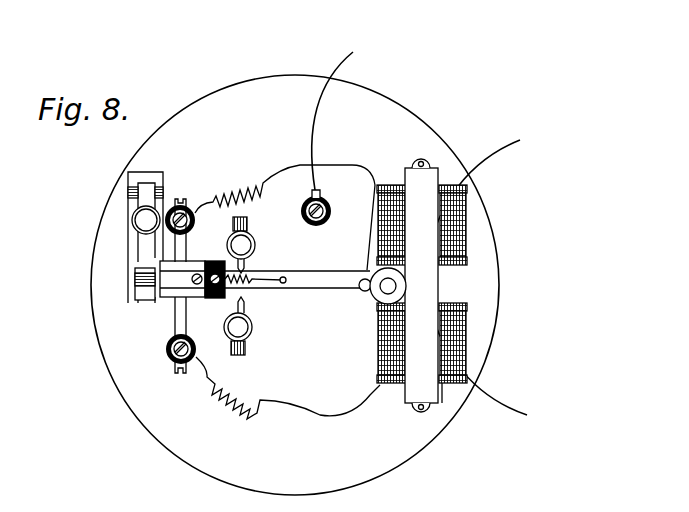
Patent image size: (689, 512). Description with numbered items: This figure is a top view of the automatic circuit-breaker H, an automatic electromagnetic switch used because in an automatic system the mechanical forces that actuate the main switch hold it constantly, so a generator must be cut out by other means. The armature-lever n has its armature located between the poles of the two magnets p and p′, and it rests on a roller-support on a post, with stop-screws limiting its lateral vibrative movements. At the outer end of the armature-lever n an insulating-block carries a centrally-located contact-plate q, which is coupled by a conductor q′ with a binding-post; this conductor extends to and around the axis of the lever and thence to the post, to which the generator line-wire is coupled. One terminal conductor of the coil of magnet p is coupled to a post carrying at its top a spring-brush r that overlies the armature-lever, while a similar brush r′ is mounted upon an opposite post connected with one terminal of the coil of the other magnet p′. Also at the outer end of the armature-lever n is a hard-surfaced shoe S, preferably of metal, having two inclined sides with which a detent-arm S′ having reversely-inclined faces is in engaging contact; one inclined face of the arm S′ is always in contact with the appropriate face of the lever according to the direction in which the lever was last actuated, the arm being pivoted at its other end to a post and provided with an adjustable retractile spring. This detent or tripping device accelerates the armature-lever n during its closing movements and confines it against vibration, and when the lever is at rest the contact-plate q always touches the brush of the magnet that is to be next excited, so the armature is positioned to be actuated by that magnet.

The automatic circuit-breaker H is at (295, 285).
The hard-surfaced shoe S is at (135, 281).
The detent-arm S′ is at (150, 258).
The contact-plate q is at (168, 294).
The conductor q′ is at (255, 280).
The spring-brush r is at (184, 252).
The brush r′ is at (182, 321).
The armature-lever n is at (315, 286).
The magnet p is at (429, 225).
The magnet p′ is at (431, 353).